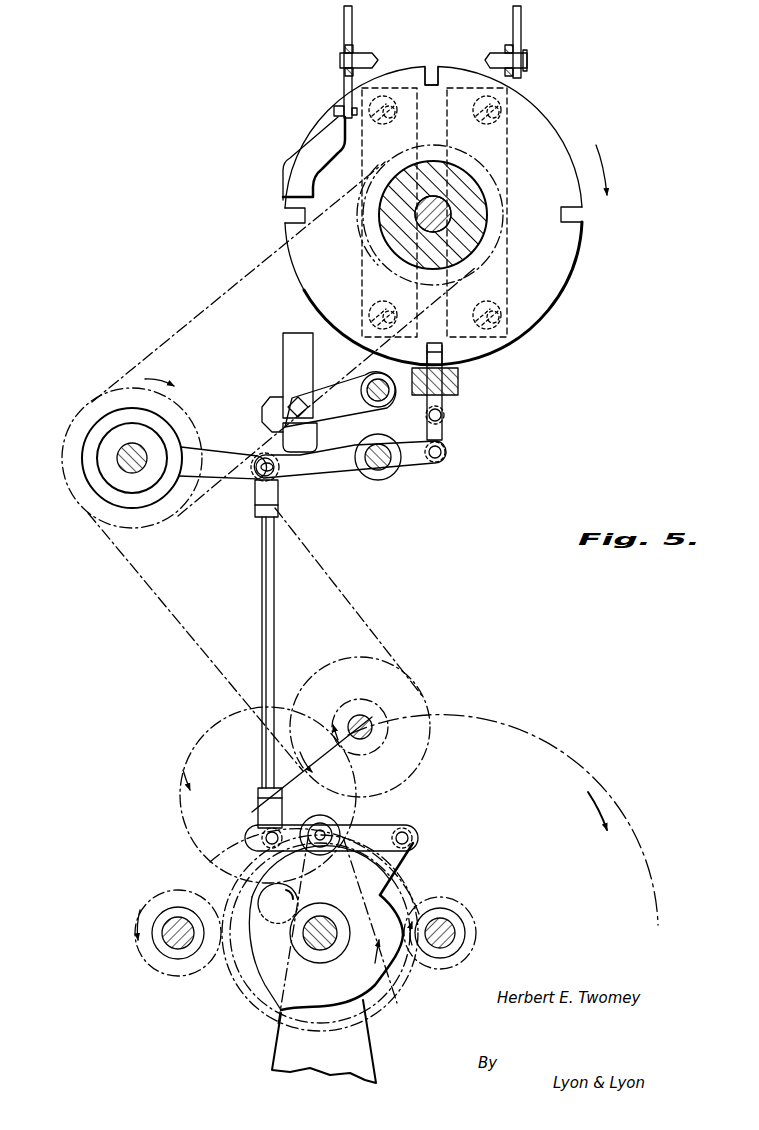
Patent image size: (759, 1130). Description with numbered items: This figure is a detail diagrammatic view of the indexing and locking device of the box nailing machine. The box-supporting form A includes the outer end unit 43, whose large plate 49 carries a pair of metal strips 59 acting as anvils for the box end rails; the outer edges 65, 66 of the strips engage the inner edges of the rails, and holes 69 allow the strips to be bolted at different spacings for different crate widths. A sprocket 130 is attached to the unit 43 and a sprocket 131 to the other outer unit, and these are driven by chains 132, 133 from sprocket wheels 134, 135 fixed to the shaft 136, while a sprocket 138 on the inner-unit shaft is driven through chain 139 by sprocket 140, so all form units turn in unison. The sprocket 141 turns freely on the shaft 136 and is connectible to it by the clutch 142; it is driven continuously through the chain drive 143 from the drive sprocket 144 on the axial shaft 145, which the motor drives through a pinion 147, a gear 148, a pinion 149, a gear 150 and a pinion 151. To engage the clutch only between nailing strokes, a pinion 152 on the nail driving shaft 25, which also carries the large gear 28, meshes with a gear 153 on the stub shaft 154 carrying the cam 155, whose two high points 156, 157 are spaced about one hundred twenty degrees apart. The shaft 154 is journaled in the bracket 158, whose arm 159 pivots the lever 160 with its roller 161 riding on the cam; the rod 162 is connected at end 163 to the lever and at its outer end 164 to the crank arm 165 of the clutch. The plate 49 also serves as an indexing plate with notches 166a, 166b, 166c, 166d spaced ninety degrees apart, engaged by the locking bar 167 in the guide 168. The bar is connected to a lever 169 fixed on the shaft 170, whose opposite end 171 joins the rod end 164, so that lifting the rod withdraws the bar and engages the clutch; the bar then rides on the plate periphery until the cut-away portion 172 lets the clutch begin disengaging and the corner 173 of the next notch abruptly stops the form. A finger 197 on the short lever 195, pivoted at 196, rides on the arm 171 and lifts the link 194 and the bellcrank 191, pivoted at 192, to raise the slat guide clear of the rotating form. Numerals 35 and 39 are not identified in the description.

The nail driving shaft 25 is at (455, 925).
The gear 28 is at (548, 742).
The shaft 35 is at (172, 925).
The roller 39 is at (142, 963).
The outer end unit 43 is at (582, 272).
The plate 49 is at (538, 112).
The metal strips 59 is at (495, 140).
The outer edge of strip 65 is at (505, 262).
The outer edge of strip 66 is at (375, 255).
The holes 69 is at (385, 121).
The sprocket 130 is at (497, 170).
The sprocket 131 is at (546, 172).
The sprocket 138 is at (544, 184).
The chain 132 is at (222, 292).
The chain 133 is at (179, 270).
The chain 139 is at (179, 283).
The sprocket wheel 134 is at (76, 412).
The sprocket wheel 135 is at (72, 317).
The sprocket 140 is at (72, 329).
The sprocket 141 is at (72, 341).
The shaft 136 is at (131, 478).
The clutch 142 is at (98, 497).
The chain drive 143 is at (145, 588).
The drive sprocket 144 is at (340, 662).
The axial shaft 145 is at (355, 717).
The pinion 147 is at (375, 705).
The gear 148 is at (222, 720).
The pinion 149 is at (277, 923).
The gear 150 is at (208, 866).
The pinion 151 is at (172, 960).
The pinion 152 is at (470, 934).
The gear 153 is at (398, 975).
The stub shaft 154 is at (322, 950).
The cam 155 is at (378, 990).
The high point 156 is at (278, 1000).
The high point 157 is at (420, 912).
The bracket 158 is at (362, 1043).
The arm 159 is at (400, 870).
The lever 160 is at (375, 830).
The roller 161 is at (318, 818).
The rod 162 is at (263, 610).
The end of rod 163 is at (258, 812).
The outer end of rod 164 is at (255, 505).
The crank arm 165 is at (220, 458).
The notch 166a is at (567, 215).
The notch 166b is at (432, 80).
The notch 166c is at (283, 210).
The notch 166d is at (475, 352).
The locking bar 167 is at (460, 383).
The guide 168 is at (452, 396).
The lever 169 is at (419, 465).
The shaft 170 is at (385, 477).
The end of lever 171 is at (332, 478).
The cut away portion 172 is at (579, 242).
The corner of notch 173 is at (586, 208).
The bellcrank 191 is at (352, 22).
The pivot 192 is at (340, 62).
The link 194 is at (312, 152).
The lever 195 is at (344, 392).
The pivot 196 is at (385, 404).
The finger 197 is at (312, 437).
The box-supporting form A is at (316, 118).